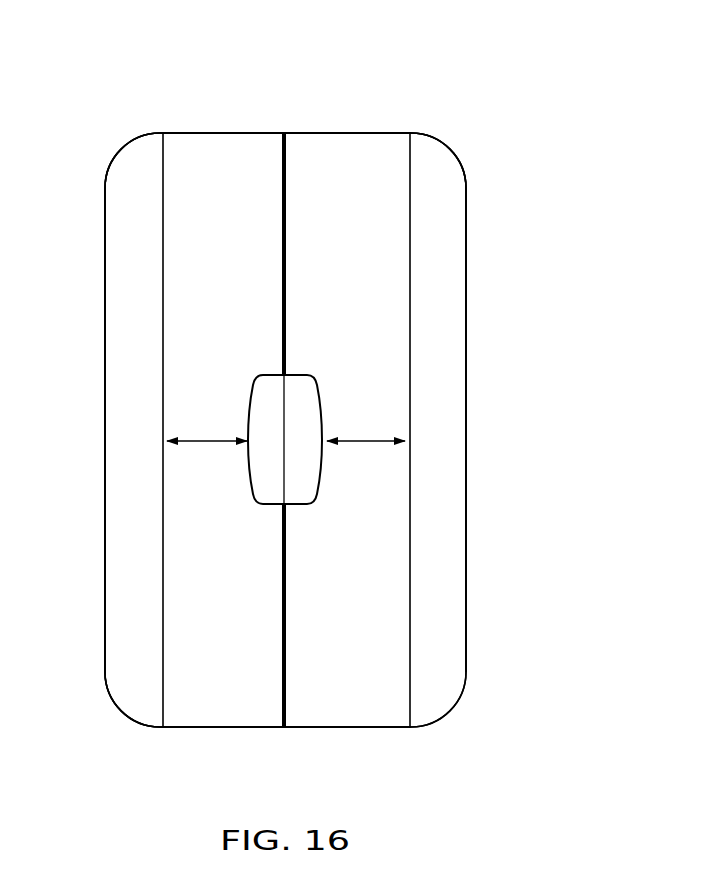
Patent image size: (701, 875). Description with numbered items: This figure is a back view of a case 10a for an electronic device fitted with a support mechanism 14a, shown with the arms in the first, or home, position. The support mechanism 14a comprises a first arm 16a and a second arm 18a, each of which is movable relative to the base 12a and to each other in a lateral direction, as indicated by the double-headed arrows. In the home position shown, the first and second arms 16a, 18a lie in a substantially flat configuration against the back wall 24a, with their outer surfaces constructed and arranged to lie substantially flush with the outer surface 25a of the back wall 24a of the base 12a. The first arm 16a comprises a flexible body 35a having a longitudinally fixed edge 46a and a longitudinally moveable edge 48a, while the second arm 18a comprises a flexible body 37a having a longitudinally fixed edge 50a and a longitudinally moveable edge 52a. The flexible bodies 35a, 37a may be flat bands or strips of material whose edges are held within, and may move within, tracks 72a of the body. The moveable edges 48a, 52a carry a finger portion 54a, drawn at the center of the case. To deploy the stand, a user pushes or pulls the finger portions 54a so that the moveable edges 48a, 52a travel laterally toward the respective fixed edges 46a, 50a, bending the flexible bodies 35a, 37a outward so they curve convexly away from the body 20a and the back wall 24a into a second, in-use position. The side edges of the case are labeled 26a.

The case 10a is at (115, 58).
The base 12a is at (437, 133).
The support mechanism 14a is at (284, 133).
The first arm 16a is at (233, 252).
The second arm 18a is at (377, 283).
The body 20a is at (460, 158).
The back wall 24a is at (138, 137).
The outer surface 25a is at (125, 662).
The side edges 26a is at (105, 393).
The flexible body 35a is at (200, 157).
The flexible body 37a is at (370, 153).
The longitudinally fixed edge 46a is at (163, 580).
The longitudinally moveable edge 48a is at (283, 530).
The longitudinally fixed edge 50a is at (410, 562).
The longitudinally moveable edge 52a is at (285, 565).
The finger portion 54a is at (260, 380).
The tracks 72a is at (222, 133).